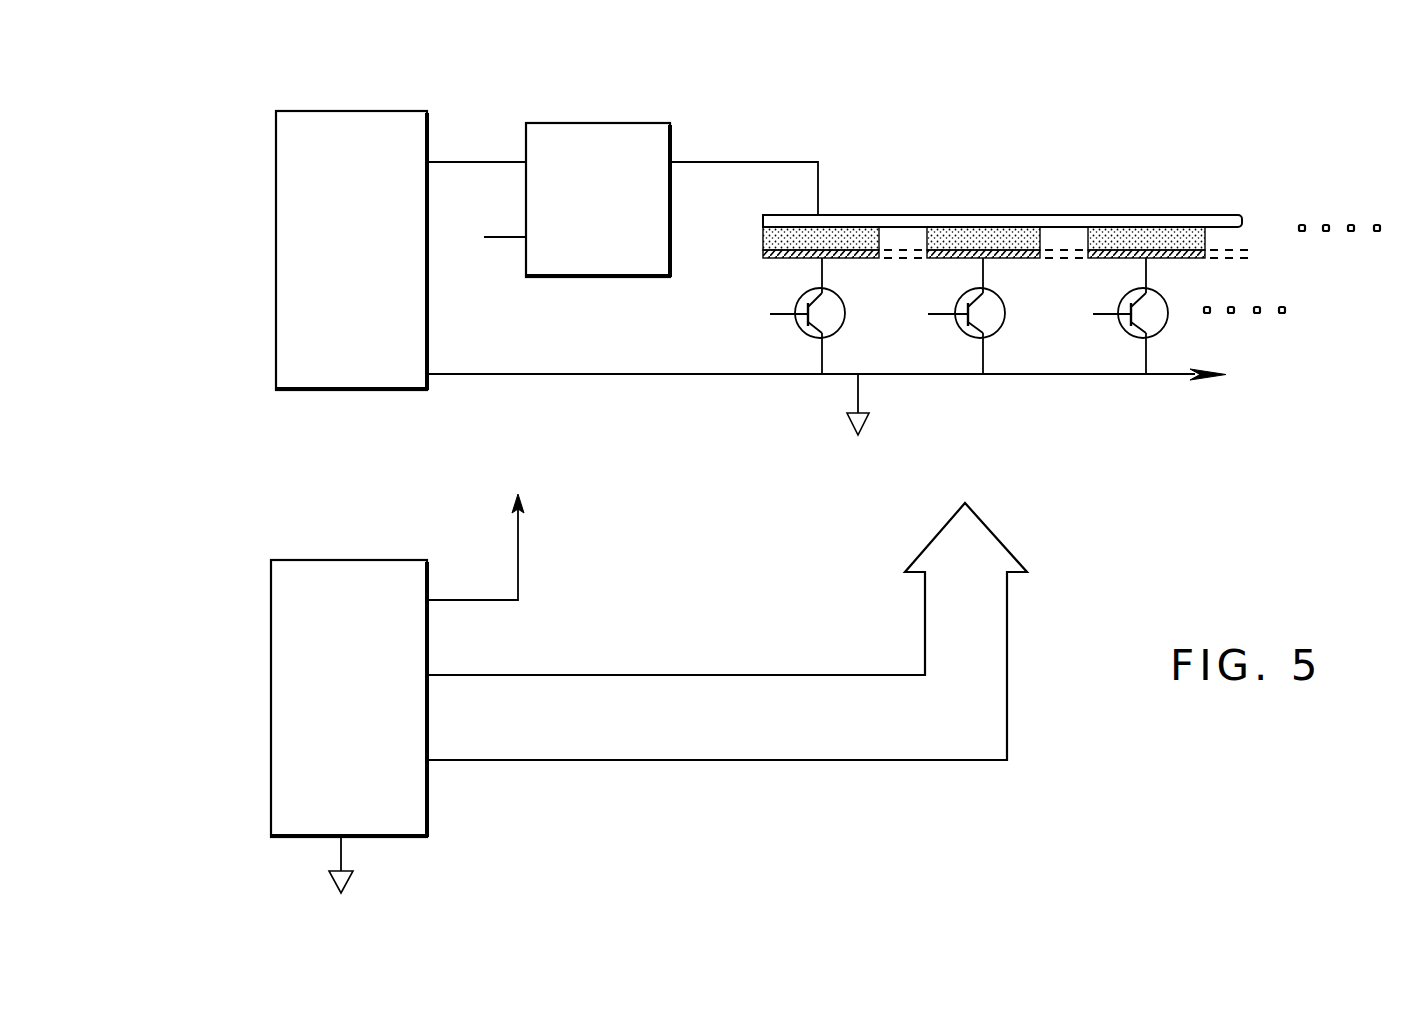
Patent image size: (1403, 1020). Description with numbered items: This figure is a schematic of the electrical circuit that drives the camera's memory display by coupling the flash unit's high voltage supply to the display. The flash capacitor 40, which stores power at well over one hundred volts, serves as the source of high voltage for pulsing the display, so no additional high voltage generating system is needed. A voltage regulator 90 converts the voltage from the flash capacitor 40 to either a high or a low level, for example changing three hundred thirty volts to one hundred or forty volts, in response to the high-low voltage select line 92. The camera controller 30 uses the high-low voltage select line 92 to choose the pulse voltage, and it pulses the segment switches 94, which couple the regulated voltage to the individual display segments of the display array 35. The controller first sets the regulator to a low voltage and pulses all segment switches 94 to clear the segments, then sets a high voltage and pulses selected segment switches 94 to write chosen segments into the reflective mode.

The camera controller 30 is at (271, 608).
The flash array 35 is at (1313, 138).
The flash capacitor 40 is at (374, 111).
The voltage regulator 90 is at (596, 123).
The high-low voltage select line 92 is at (501, 240).
The segment switches 94 is at (793, 340).